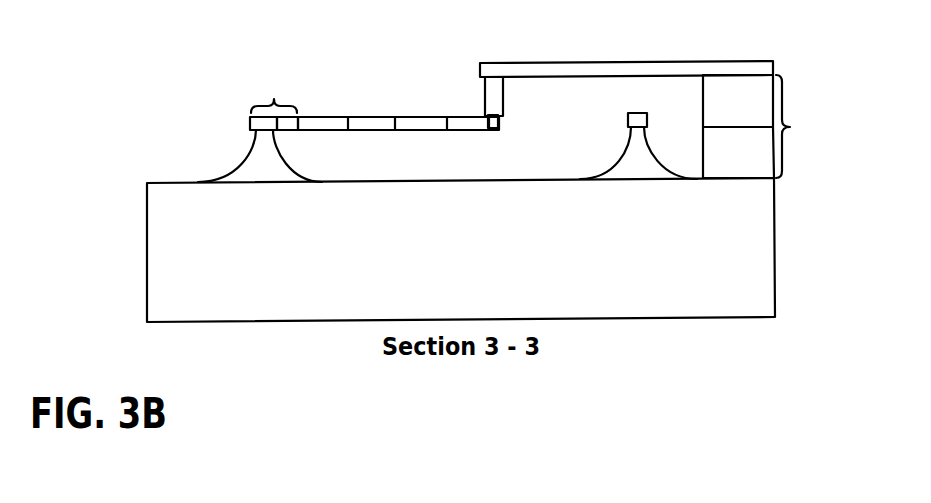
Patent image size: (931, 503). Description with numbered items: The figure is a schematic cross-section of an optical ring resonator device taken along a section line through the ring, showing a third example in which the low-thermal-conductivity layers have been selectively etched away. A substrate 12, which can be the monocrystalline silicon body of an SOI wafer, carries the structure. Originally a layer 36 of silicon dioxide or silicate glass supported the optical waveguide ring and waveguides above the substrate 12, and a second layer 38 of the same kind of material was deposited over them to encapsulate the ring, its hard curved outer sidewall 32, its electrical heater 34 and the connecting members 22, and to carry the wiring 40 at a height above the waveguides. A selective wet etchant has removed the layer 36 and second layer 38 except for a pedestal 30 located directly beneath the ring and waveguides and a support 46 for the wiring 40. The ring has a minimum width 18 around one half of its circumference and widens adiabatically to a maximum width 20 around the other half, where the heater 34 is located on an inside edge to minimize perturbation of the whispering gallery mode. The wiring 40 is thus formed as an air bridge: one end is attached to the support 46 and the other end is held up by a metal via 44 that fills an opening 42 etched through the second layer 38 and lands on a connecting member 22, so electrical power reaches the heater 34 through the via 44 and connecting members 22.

The substrate 12 is at (209, 290).
The minimum width 18 is at (648, 118).
The maximum width 20 is at (274, 90).
The connecting members 22 is at (497, 133).
The pedestal 30 is at (247, 158).
The curved outer sidewall 32 is at (250, 125).
The electrical heater 34 is at (292, 117).
The layer 36 is at (752, 165).
The second layer 38 is at (752, 112).
The wiring 40 is at (637, 61).
The opening 42 is at (503, 97).
The metal via 44 is at (492, 97).
The support 46 is at (800, 126).